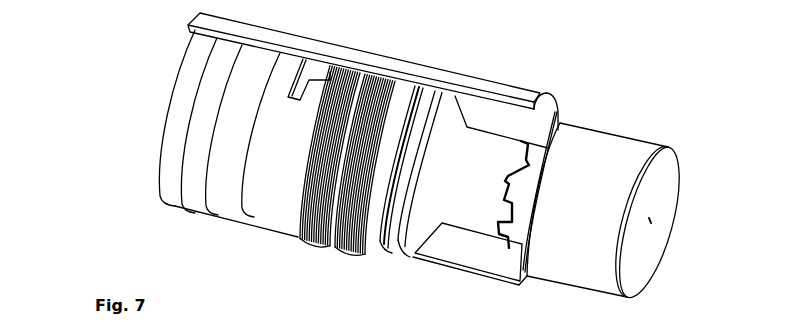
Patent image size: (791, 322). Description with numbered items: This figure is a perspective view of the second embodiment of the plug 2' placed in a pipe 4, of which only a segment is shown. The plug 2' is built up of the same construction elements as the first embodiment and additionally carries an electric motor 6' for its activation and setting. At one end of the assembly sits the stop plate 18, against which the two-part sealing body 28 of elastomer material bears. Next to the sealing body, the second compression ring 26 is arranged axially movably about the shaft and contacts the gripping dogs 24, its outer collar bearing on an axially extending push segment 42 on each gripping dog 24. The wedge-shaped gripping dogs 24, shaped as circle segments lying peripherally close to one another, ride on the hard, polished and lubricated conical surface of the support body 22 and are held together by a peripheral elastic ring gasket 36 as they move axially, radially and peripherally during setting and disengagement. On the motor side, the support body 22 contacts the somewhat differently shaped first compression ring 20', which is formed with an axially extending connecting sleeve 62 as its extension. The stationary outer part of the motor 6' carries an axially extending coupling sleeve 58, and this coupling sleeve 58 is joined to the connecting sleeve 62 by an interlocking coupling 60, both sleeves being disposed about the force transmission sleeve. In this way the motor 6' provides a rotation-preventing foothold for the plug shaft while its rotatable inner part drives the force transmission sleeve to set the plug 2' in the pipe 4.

The plug 2' is at (107, 83).
The stop plate 18 is at (173, 138).
The two-part sealing body 28 is at (222, 208).
The second compression ring 26 is at (260, 212).
The gripping dogs 24 is at (306, 246).
The ring gasket 36 is at (366, 73).
The push segment 42 is at (309, 62).
The support body 22 is at (373, 230).
The first compression ring 20' is at (417, 202).
The connecting sleeve 62 is at (468, 208).
The interlocking coupling 60 is at (518, 222).
The pipe 4 is at (556, 98).
The coupling sleeve 58 is at (547, 158).
The electric motor 6' is at (609, 203).